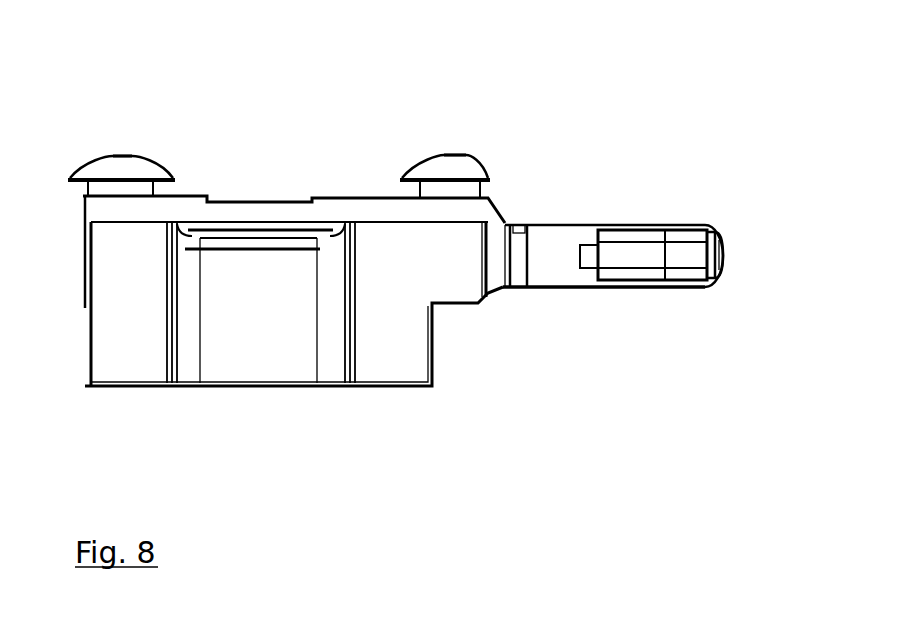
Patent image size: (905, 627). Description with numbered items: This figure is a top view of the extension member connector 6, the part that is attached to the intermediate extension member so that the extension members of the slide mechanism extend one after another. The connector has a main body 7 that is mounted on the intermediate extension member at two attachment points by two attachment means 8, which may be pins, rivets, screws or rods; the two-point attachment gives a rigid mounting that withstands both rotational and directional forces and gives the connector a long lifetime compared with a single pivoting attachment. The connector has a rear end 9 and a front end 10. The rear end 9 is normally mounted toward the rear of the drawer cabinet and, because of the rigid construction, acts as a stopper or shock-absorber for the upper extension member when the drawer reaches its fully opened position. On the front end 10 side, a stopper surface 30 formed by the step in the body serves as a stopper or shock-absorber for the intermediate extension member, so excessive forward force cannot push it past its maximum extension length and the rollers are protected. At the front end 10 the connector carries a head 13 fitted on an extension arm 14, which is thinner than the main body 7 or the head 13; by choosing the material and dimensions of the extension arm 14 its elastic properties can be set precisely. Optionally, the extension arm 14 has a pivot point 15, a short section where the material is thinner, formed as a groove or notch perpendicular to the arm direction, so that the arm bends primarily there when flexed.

The extension member connector 6 is at (333, 205).
The main body 7 is at (262, 285).
The attachment means 8 is at (102, 158).
The rear end 9 is at (85, 272).
The front end 10 is at (725, 253).
The head 13 is at (683, 258).
The extension arm 14 is at (557, 250).
The pivot point 15 is at (522, 287).
The stopper surface 30 is at (437, 337).